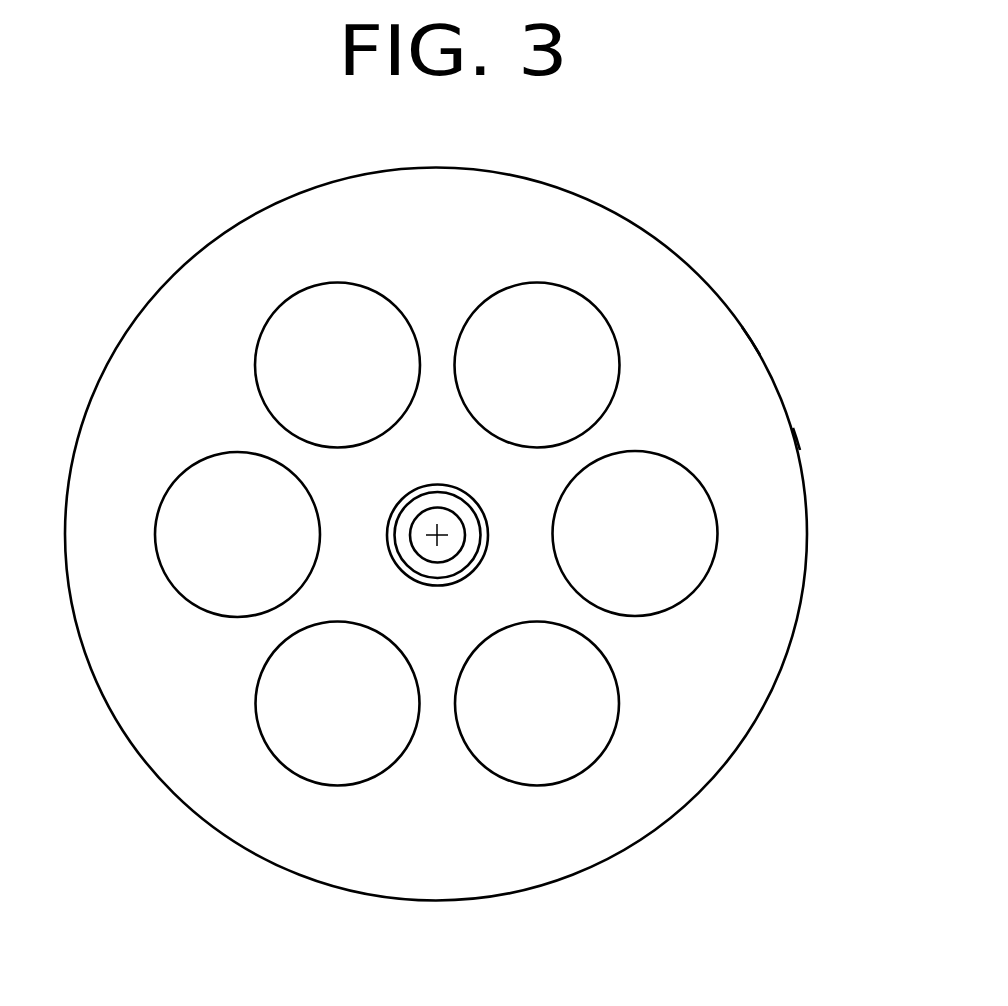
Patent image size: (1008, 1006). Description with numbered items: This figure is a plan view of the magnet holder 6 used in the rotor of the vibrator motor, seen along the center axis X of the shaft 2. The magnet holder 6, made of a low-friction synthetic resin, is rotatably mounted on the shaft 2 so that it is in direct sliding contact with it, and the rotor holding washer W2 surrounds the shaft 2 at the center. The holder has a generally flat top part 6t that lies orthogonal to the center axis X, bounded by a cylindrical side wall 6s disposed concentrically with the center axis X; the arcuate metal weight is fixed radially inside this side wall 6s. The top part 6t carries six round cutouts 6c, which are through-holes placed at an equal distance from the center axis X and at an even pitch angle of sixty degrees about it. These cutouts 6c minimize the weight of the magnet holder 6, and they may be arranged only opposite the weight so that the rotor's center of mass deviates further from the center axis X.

The magnet holder 6 is at (648, 228).
The top part 6t is at (710, 358).
The cylindrical side wall 6s is at (793, 428).
The round cutouts 6c is at (685, 528).
The rotor holding washer W2 is at (410, 505).
The shaft 2 is at (423, 545).
The center axis X is at (437, 537).